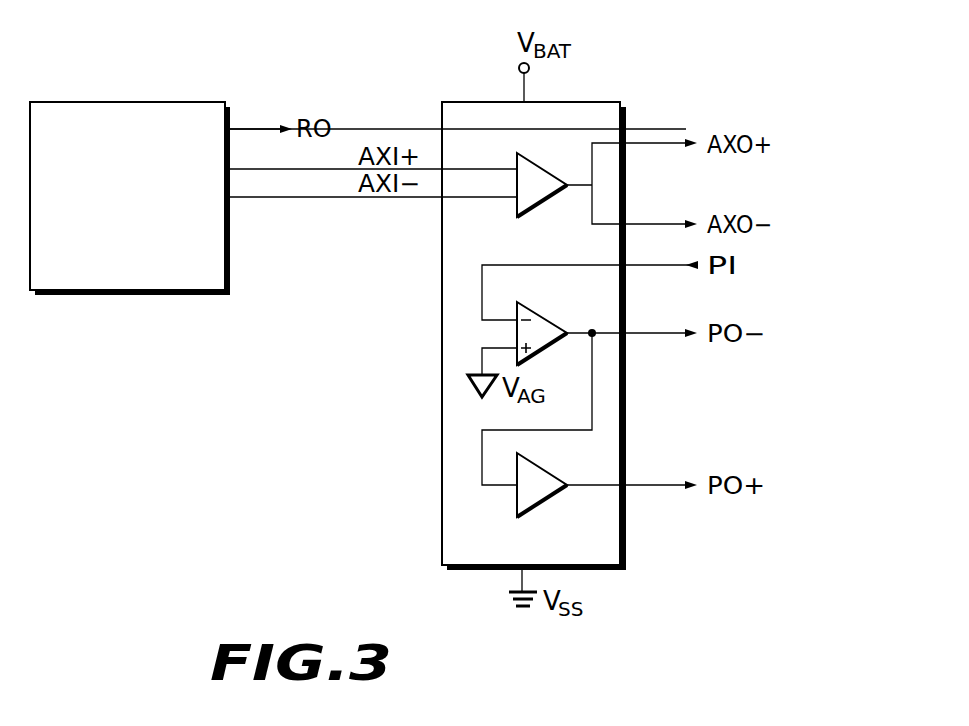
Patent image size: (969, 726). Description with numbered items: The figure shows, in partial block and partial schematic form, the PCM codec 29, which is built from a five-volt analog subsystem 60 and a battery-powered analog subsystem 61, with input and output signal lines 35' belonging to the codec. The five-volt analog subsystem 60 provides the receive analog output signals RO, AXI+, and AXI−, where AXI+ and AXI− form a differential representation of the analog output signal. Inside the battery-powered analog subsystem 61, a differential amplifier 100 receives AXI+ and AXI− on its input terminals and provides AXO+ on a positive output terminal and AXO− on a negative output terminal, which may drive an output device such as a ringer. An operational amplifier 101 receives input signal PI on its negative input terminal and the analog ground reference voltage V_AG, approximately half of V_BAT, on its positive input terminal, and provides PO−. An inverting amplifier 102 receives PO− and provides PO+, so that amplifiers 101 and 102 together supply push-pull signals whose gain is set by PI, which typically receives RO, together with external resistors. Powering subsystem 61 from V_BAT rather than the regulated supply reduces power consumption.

The five-volt analog subsystem 60 is at (190, 100).
The battery-powered analog subsystem 61 is at (583, 102).
The differential amplifier 100 is at (527, 158).
The operational amplifier 101 is at (527, 308).
The inverting amplifier 102 is at (555, 498).
The input and output signal lines 35' is at (728, 41).
The PCM codec 29 is at (330, 618).